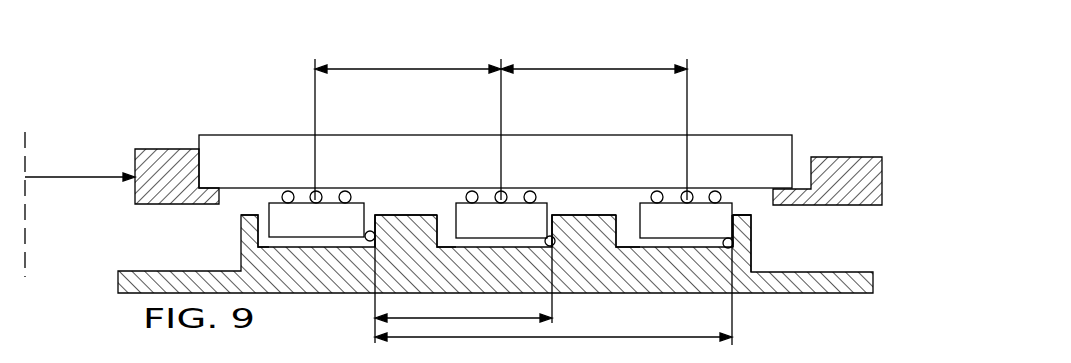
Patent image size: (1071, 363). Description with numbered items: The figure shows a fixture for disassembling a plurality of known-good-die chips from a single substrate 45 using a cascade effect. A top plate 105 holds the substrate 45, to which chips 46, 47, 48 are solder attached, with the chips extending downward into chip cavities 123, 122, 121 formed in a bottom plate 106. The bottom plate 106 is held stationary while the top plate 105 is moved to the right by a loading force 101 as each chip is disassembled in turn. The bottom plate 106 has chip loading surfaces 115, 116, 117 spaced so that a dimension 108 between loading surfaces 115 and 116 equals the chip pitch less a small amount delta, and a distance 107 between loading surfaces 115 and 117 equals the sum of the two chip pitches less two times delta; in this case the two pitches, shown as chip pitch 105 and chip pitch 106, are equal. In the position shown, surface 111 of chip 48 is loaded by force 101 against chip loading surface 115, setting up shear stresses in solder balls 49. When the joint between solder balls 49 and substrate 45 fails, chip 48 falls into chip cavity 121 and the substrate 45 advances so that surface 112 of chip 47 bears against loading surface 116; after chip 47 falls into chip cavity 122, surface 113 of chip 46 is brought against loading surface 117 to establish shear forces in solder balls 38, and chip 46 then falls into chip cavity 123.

The solder balls 38 is at (293, 187).
The substrate 45 is at (762, 143).
The chip 46 is at (347, 217).
The chip 47 is at (538, 208).
The chip 48 is at (650, 212).
The solder balls 49 is at (718, 193).
The loading force 101 is at (63, 178).
The top plate 105 is at (160, 154).
The bottom plate 106 is at (576, 69).
The distance 107 is at (438, 318).
The dimension 108 is at (620, 337).
The chip surface 111 is at (748, 210).
The chip surface 112 is at (550, 215).
The chip surface 113 is at (365, 221).
The chip loading surface 115 is at (748, 237).
The chip loading surface 116 is at (553, 243).
The chip loading surface 117 is at (378, 240).
The chip cavity 121 is at (627, 222).
The chip cavity 122 is at (443, 223).
The chip cavity 123 is at (263, 220).